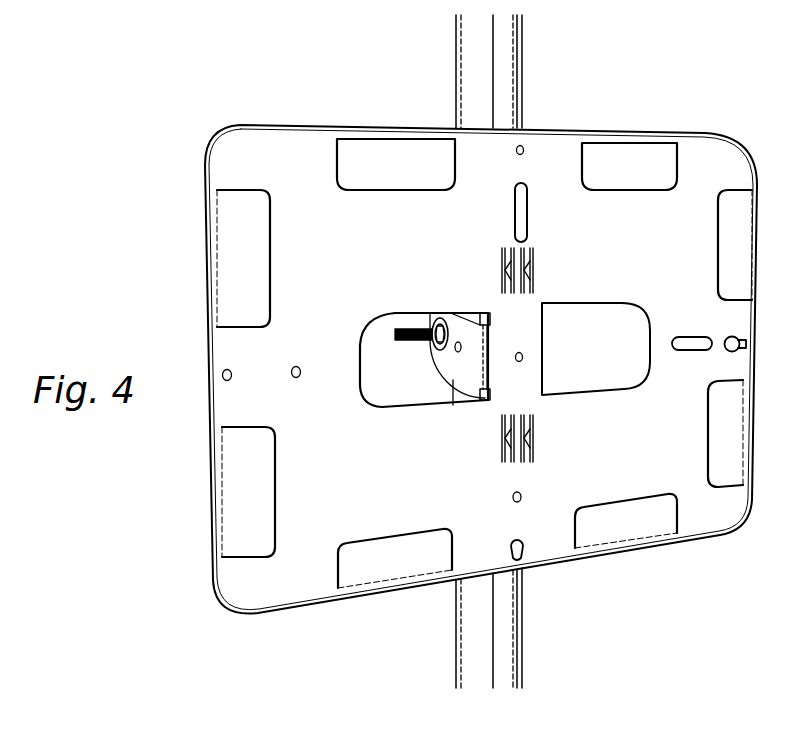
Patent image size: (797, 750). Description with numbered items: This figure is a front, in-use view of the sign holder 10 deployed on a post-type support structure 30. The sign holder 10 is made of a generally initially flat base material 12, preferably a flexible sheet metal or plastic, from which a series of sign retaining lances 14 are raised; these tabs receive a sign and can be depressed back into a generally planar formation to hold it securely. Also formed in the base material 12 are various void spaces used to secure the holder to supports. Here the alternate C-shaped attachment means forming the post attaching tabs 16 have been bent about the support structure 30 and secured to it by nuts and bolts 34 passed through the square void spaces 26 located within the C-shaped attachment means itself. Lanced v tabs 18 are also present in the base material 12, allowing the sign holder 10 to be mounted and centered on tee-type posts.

The sign holder 10 is at (163, 215).
The base material 12 is at (697, 180).
The sign retaining lances 14 is at (410, 160).
The post attaching tabs 16 is at (450, 360).
The lanced v tabs 18 is at (533, 268).
The square void spaces 26 is at (457, 313).
The support structure 30 is at (473, 653).
The nuts and bolts 34 is at (425, 325).